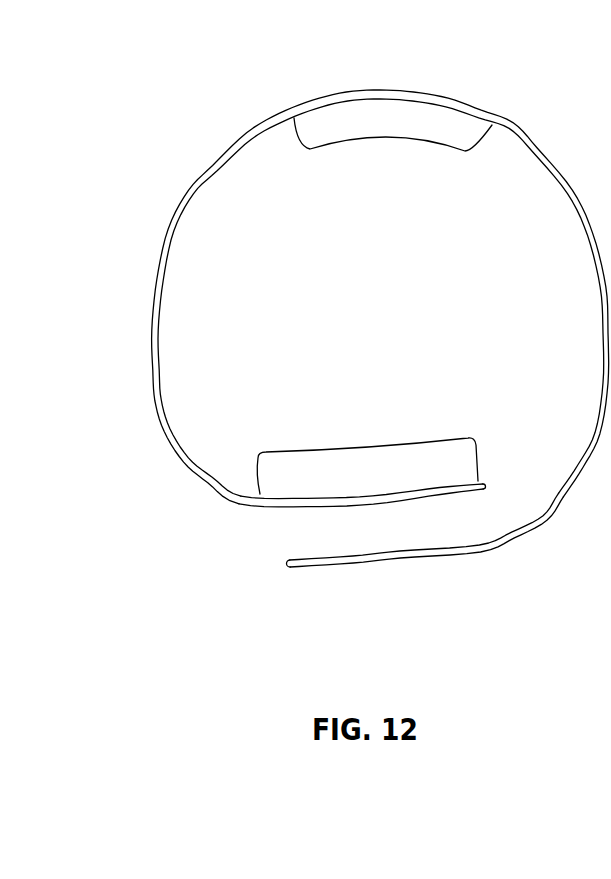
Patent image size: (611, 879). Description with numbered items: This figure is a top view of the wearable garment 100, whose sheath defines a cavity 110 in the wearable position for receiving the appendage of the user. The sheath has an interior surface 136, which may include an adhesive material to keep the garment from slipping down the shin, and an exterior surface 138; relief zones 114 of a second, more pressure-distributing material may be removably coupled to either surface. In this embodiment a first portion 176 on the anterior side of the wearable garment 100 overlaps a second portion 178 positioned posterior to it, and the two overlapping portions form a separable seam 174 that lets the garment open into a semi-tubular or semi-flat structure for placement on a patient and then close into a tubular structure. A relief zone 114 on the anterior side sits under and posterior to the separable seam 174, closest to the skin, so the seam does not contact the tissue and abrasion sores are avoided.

The wearable garment 100 is at (193, 70).
The cavity 110 is at (222, 287).
The relief zones 114 is at (442, 128).
The interior surface 136 is at (180, 223).
The exterior surface 138 is at (190, 187).
The separable seam 174 is at (283, 542).
The first portion 176 is at (353, 558).
The second portion 178 is at (437, 493).